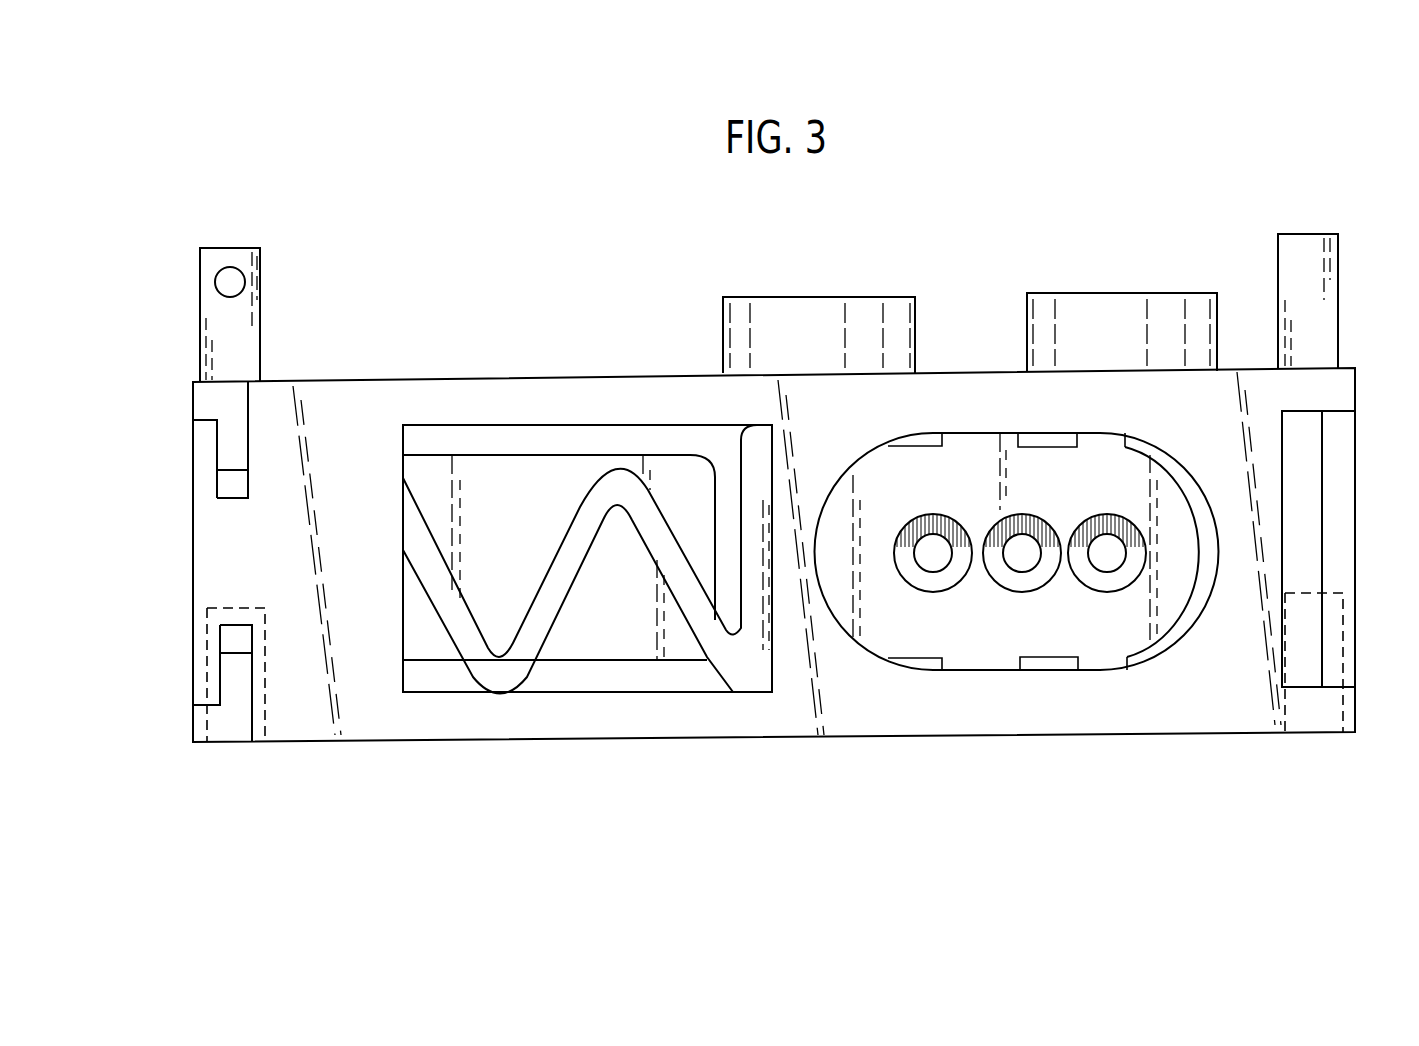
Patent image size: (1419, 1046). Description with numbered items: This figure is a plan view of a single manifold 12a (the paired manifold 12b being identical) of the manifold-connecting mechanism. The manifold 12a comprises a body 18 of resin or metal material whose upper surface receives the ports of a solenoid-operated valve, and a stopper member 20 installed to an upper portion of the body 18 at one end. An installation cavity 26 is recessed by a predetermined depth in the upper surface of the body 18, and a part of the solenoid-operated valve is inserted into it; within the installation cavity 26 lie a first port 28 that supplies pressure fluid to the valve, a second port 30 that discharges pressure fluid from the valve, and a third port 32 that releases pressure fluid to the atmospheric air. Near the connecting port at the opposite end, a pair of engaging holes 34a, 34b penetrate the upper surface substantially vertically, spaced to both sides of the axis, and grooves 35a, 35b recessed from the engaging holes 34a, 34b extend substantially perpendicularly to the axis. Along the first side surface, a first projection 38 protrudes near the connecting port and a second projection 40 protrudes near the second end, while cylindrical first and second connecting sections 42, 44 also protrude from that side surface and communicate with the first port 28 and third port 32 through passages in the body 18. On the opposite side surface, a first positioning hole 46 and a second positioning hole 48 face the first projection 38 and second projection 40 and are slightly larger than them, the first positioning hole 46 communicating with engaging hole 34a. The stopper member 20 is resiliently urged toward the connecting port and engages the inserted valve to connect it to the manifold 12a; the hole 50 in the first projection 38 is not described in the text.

The manifold 12a is at (993, 199).
The manifold 12b is at (1045, 199).
The body 18 is at (844, 715).
The stopper member 20 is at (1330, 549).
The installation cavity 26 is at (1170, 492).
The first port 28 is at (1105, 557).
The second port 30 is at (1022, 557).
The third port 32 is at (937, 557).
The engaging hole 34a is at (237, 641).
The engaging hole 34b is at (230, 488).
The groove 35a is at (225, 691).
The groove 35b is at (225, 450).
The first projection 38 is at (240, 335).
The second projection 40 is at (1325, 309).
The first connecting section 42 is at (1107, 313).
The second connecting section 44 is at (818, 318).
The first positioning hole 46 is at (263, 747).
The second positioning hole 48 is at (1340, 737).
The mounting hole 50 is at (230, 283).